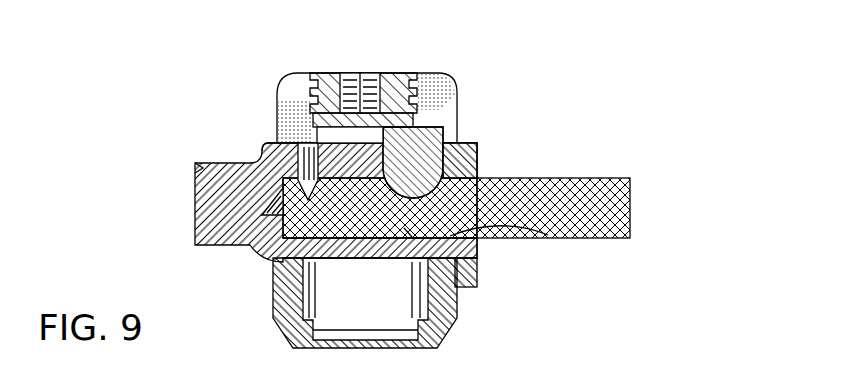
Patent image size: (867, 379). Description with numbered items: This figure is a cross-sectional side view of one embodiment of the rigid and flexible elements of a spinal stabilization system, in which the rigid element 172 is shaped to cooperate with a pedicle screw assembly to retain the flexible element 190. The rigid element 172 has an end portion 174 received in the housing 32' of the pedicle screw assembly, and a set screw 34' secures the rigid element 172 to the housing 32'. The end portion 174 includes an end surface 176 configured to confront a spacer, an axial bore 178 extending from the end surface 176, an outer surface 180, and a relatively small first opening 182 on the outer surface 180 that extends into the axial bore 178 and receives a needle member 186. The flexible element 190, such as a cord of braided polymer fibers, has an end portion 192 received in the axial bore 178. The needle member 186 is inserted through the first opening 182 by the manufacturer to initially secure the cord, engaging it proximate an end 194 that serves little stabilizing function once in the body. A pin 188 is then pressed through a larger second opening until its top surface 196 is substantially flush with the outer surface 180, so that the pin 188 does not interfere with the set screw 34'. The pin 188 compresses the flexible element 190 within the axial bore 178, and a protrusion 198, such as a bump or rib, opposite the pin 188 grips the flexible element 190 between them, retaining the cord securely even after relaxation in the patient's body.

The set screw 34' is at (367, 71).
The needle member 186 is at (296, 140).
The outer surface 180 is at (284, 122).
The top surface 196 is at (433, 122).
The rigid element 172 is at (221, 165).
The first opening 182 is at (292, 158).
The flexible element 190 is at (583, 178).
The pin 188 is at (444, 125).
The end 194 is at (267, 220).
The end portion 192 is at (372, 213).
The protrusion 198 is at (410, 236).
The end surface 176 is at (478, 261).
The axial bore 178 is at (545, 226).
The end portion 174 is at (462, 288).
The housing 32' is at (313, 303).